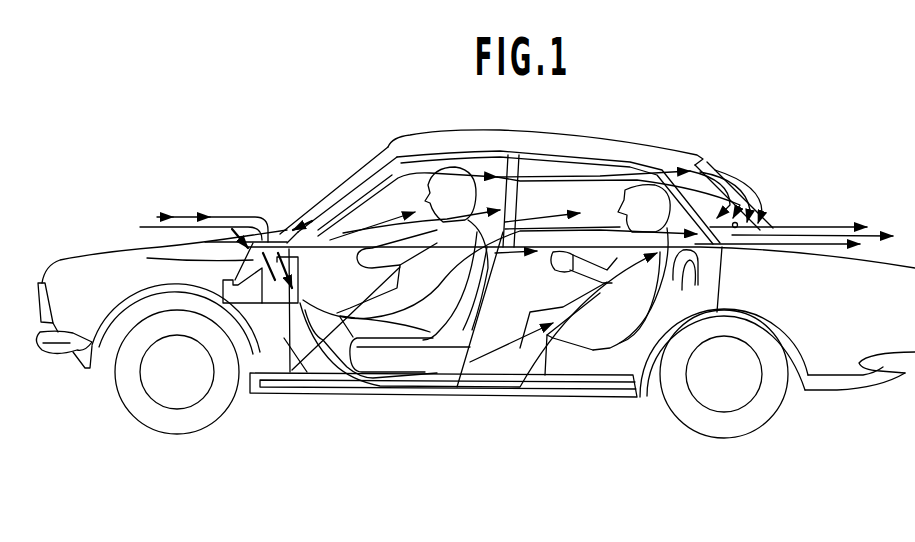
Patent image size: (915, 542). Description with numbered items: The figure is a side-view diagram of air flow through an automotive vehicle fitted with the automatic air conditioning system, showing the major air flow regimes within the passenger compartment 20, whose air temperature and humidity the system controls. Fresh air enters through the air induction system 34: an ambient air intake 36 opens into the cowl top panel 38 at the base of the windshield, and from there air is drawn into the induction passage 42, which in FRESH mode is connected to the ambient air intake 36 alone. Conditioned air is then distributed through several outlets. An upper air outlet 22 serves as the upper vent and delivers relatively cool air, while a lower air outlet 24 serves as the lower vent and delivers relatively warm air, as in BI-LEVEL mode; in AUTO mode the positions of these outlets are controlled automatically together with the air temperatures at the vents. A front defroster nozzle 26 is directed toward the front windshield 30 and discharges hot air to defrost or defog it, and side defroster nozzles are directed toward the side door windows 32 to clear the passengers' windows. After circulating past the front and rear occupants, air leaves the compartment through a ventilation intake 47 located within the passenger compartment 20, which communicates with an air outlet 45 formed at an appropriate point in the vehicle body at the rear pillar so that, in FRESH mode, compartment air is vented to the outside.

The passenger compartment 20 is at (587, 173).
The upper air outlet 22 is at (347, 247).
The lower air outlet 24 is at (290, 372).
The front defroster nozzle 26 is at (303, 228).
The front windshield 30 is at (362, 165).
The side door windows 32 is at (415, 175).
The air induction system 34 is at (232, 229).
The ambient air intake 36 is at (275, 237).
The cowl top panel 38 is at (262, 237).
The induction passage 42 is at (185, 261).
The air outlet 45 is at (785, 232).
The ventilation intake 47 is at (740, 228).